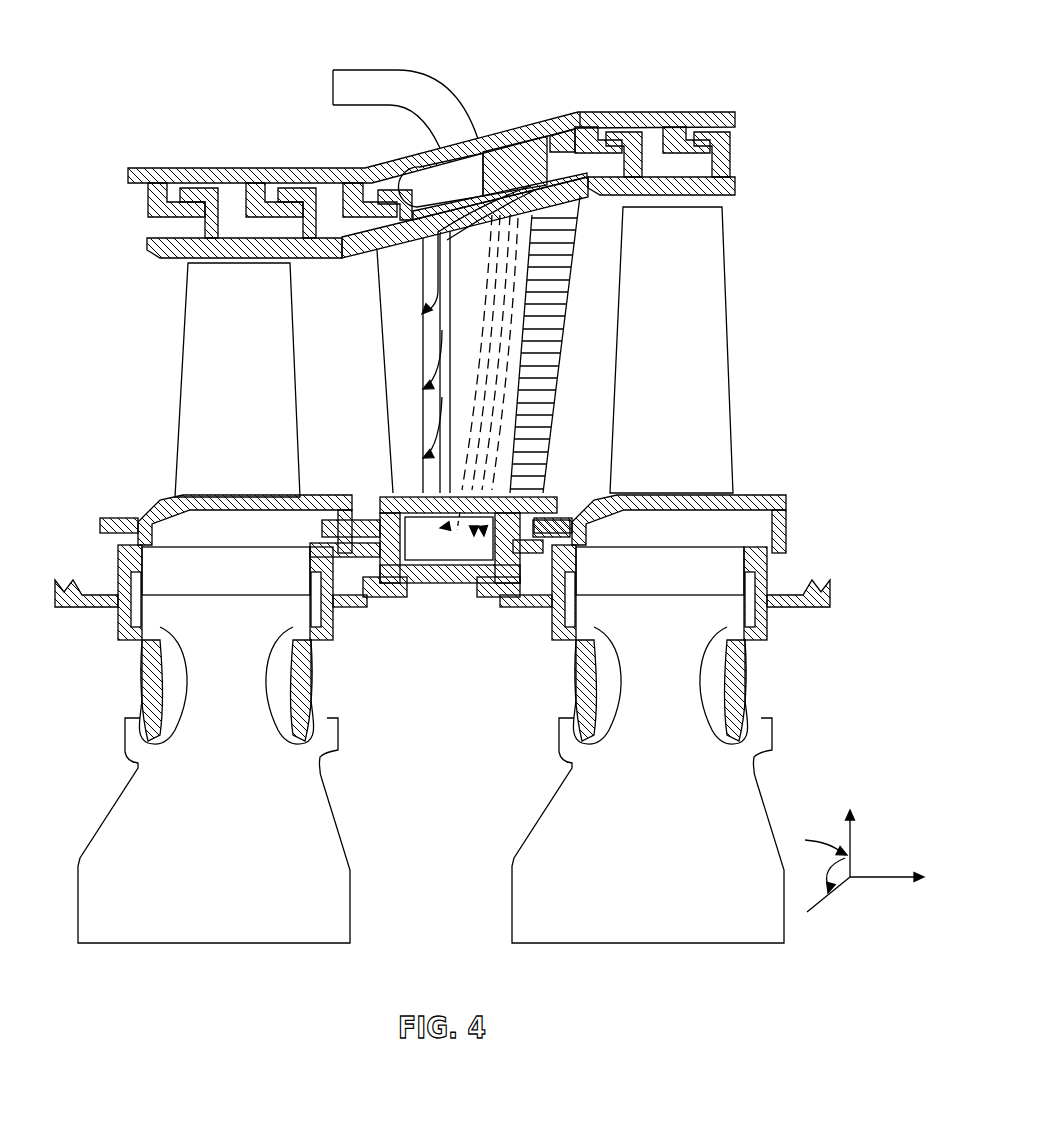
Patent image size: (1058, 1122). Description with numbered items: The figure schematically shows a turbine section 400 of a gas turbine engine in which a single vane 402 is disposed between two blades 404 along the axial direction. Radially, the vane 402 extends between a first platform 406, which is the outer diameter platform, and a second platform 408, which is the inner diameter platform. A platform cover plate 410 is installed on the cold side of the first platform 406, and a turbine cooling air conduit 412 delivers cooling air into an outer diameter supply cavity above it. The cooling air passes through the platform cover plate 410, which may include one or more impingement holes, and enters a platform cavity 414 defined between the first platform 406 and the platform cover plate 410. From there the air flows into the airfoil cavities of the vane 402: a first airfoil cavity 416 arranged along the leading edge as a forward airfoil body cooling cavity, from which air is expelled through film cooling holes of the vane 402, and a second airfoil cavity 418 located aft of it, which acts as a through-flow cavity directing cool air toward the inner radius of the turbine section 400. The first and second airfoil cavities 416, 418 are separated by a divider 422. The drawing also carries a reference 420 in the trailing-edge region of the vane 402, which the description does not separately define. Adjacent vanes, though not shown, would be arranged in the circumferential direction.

The turbine section 400 is at (134, 27).
The vane 402 is at (495, 339).
The blades 404 is at (182, 384).
The first platform 406 is at (357, 248).
The second platform 408 is at (384, 497).
The platform cover plate 410 is at (414, 167).
The turbine cooling air conduit 412 is at (433, 80).
The platform cavity 414 is at (535, 187).
The first airfoil cavity 416 is at (418, 408).
The second airfoil cavity 418 is at (506, 431).
The trailing edge pedestals 420 is at (523, 247).
The divider 422 is at (447, 483).